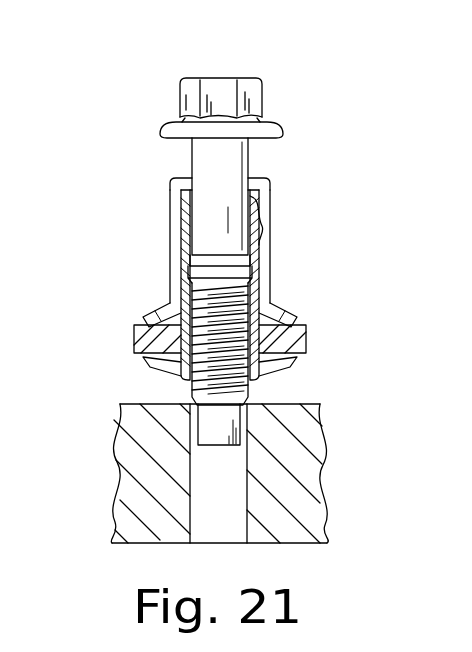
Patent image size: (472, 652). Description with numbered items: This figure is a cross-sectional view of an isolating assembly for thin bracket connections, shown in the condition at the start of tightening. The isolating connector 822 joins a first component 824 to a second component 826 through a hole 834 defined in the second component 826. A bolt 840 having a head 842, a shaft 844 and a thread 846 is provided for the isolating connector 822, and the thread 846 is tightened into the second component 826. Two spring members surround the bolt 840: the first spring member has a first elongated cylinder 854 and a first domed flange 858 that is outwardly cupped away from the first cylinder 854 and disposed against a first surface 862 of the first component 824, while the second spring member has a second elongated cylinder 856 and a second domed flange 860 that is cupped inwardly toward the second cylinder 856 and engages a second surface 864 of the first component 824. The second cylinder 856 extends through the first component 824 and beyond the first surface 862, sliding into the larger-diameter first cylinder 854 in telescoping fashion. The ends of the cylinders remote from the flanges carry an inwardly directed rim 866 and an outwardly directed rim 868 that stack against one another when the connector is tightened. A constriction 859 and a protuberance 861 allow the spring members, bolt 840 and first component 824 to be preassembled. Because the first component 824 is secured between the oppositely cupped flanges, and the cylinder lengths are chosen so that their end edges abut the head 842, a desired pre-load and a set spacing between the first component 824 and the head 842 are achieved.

The isolating connector 822 is at (126, 119).
The bolt 840 is at (219, 65).
The head 842 is at (253, 93).
The shaft 844 is at (232, 155).
The thread 846 is at (250, 388).
The first elongated cylinder 854 is at (172, 196).
The second elongated cylinder 856 is at (185, 237).
The first domed flange 858 is at (155, 307).
The constriction 859 is at (245, 285).
The second domed flange 860 is at (167, 377).
The protuberance 861 is at (225, 262).
The first surface 862 is at (298, 320).
The second surface 864 is at (293, 358).
The inwardly directed rim 866 is at (186, 178).
The outwardly directed rim 868 is at (268, 203).
The first component 824 is at (133, 340).
The second component 826 is at (142, 458).
The hole 834 is at (232, 533).